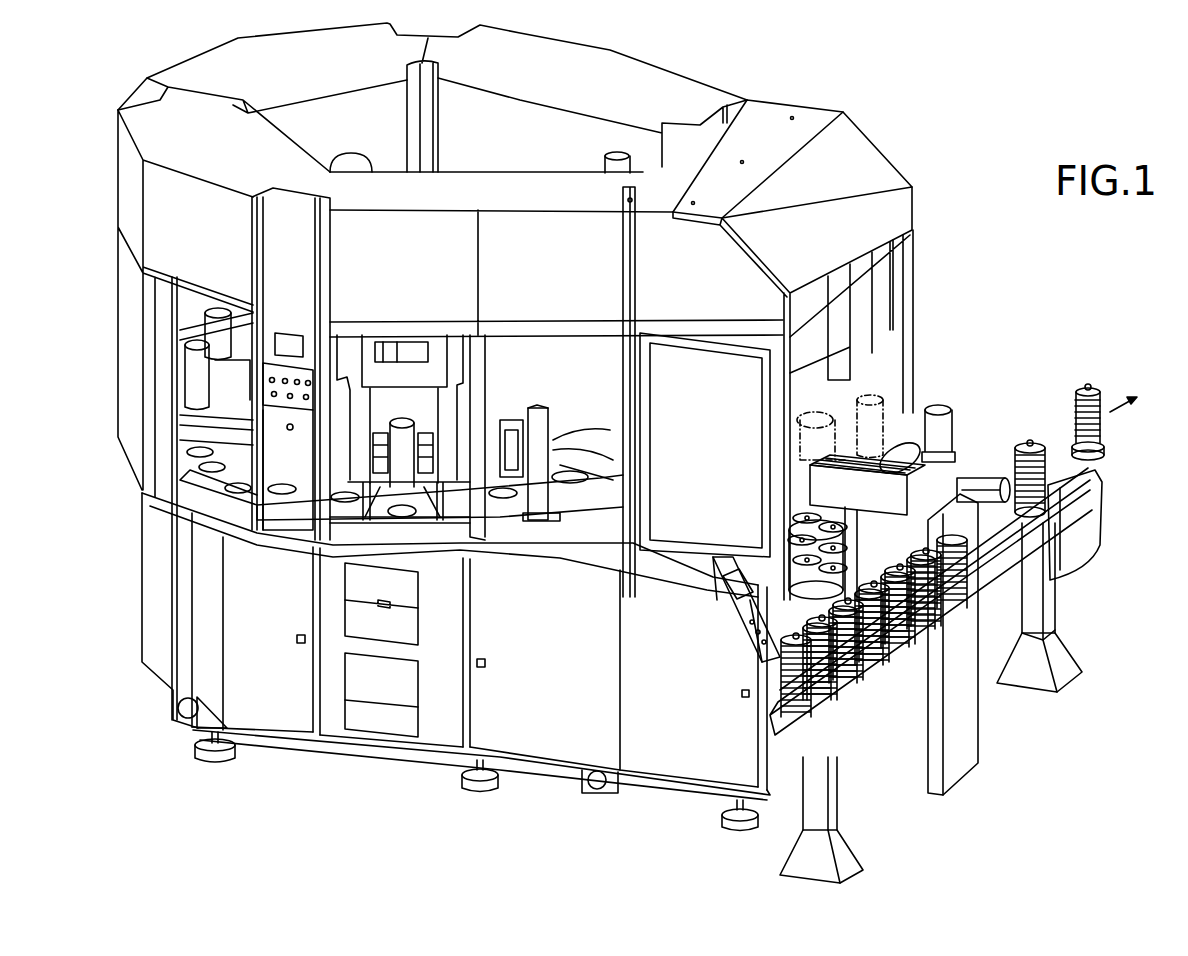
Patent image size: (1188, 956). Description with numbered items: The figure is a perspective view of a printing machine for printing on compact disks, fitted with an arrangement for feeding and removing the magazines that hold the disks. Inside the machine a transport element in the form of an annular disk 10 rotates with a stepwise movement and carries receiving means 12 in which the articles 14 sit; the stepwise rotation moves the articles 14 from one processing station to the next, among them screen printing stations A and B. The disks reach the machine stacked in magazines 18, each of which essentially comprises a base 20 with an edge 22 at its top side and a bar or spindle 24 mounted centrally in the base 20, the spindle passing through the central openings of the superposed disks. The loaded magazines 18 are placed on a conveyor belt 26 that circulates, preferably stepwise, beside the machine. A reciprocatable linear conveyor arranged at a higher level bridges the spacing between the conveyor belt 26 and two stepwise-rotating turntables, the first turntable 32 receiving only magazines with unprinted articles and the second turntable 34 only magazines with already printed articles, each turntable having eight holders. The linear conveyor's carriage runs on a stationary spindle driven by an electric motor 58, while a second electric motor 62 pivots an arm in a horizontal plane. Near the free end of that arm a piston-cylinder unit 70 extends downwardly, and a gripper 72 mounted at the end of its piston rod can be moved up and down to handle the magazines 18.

The annular disk 10 is at (587, 497).
The receiving means 12 is at (193, 457).
The articles 14 is at (777, 662).
The magazines 18 is at (777, 690).
The base 20 is at (1098, 463).
The edge 22 is at (1105, 445).
The bar or spindle 24 is at (1088, 387).
The conveyor belt 26 is at (995, 530).
The first turntable 32 is at (816, 561).
The second turntable 34 is at (807, 518).
The electric motor 58 is at (980, 478).
The electric motor 62 is at (935, 408).
The piston-cylinder unit 70 is at (905, 488).
The gripper 72 is at (930, 520).
The screen printing station A is at (407, 532).
The screen printing station B is at (217, 508).